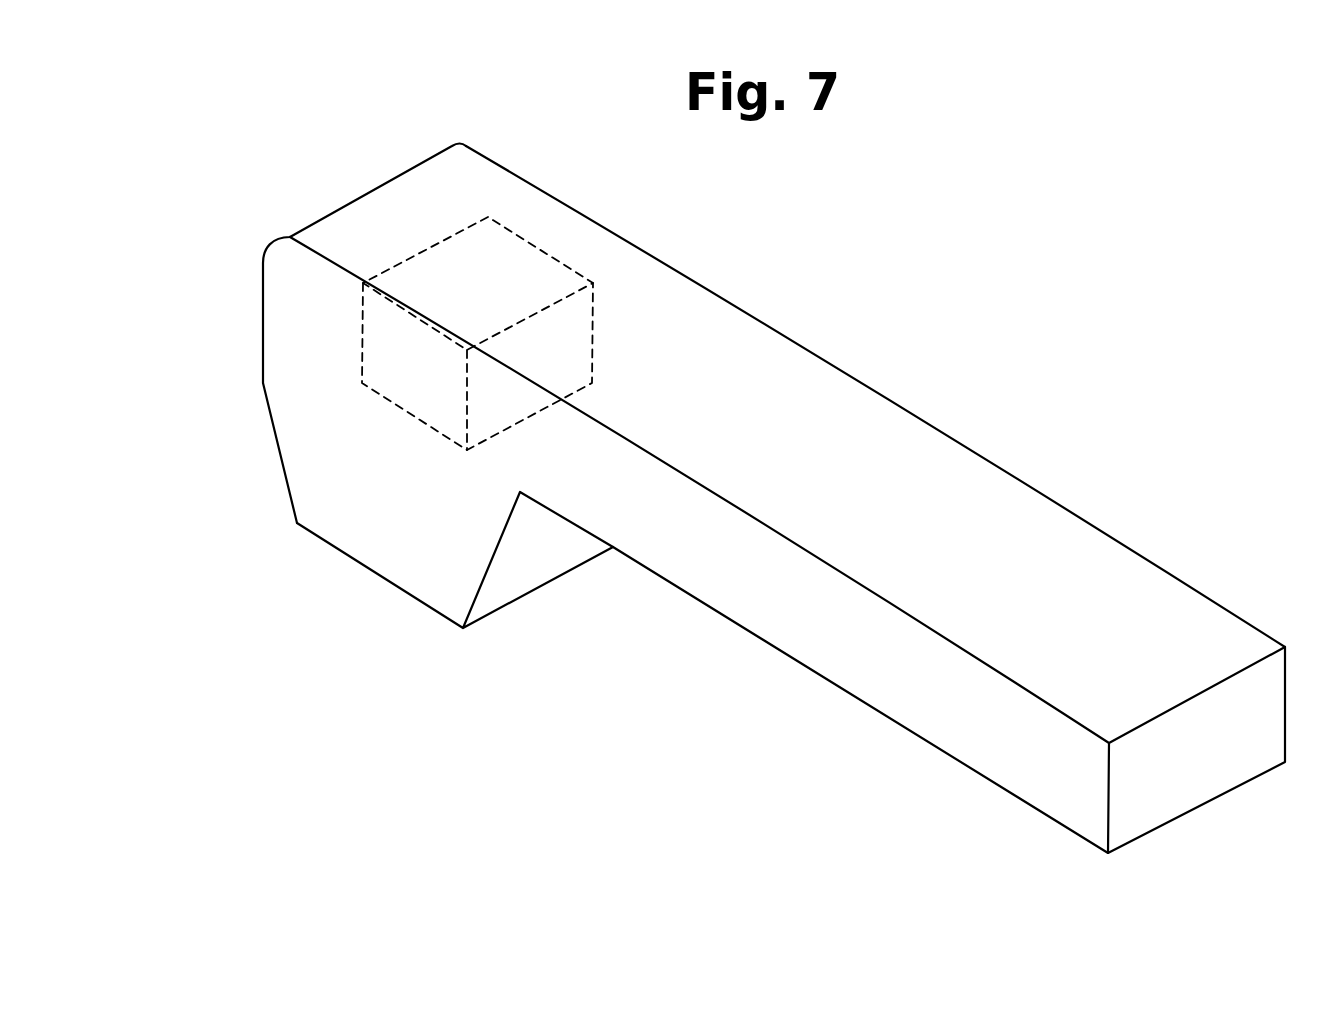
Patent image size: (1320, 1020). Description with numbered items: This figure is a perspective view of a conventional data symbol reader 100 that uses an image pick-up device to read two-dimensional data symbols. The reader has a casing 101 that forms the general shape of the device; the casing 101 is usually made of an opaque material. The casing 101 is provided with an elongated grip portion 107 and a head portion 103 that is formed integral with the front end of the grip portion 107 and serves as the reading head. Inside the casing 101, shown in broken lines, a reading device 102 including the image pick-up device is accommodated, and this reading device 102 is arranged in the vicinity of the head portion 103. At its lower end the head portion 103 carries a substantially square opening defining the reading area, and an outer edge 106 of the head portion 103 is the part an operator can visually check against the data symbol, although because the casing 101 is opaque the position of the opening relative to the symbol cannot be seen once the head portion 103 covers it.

The data symbol reader 100 is at (733, 499).
The casing 101 is at (955, 437).
The reading device 102 is at (546, 253).
The head portion 103 is at (428, 585).
The outer edge 106 is at (323, 543).
The grip portion 107 is at (1112, 565).